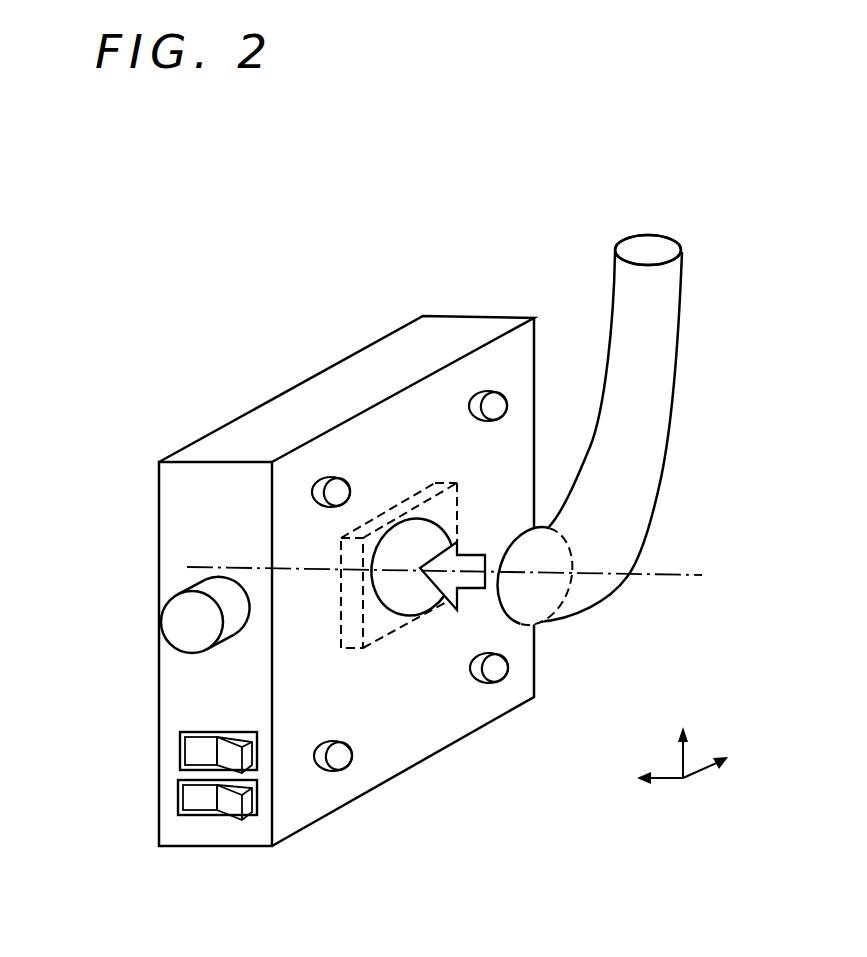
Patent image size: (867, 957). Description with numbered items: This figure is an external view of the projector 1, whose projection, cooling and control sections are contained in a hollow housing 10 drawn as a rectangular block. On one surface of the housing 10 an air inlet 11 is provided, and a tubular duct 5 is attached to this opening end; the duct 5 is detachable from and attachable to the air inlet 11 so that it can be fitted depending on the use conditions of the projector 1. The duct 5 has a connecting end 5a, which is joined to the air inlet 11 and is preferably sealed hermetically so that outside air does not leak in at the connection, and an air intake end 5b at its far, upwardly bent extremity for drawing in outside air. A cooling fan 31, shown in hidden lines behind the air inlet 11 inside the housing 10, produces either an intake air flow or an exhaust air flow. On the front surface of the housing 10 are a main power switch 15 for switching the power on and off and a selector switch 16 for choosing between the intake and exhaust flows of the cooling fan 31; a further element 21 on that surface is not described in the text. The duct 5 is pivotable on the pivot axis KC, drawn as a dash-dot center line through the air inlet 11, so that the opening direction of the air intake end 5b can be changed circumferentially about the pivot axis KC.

The projector 1 is at (97, 233).
The housing 10 is at (462, 316).
The air inlet 11 is at (418, 516).
The cooling fan 31 is at (352, 648).
The duct 5 is at (668, 446).
The connecting end 5a is at (507, 540).
The air intake end 5b is at (676, 228).
The knob 21 is at (161, 622).
The selector switch 16 is at (180, 748).
The main power switch 15 is at (204, 813).
The pivot axis KC is at (677, 575).